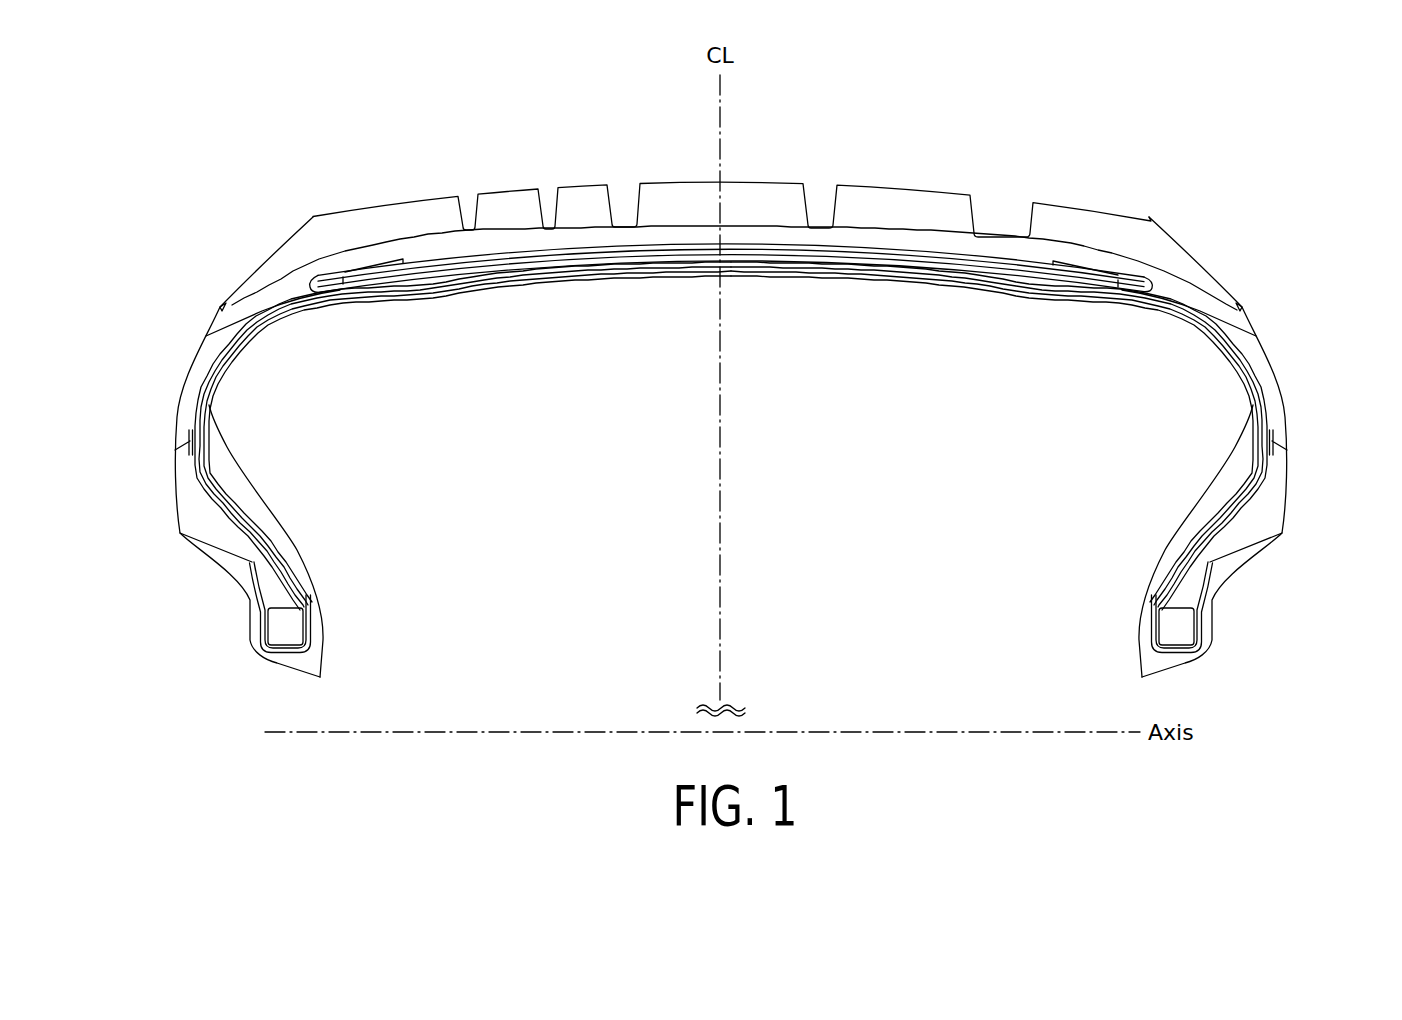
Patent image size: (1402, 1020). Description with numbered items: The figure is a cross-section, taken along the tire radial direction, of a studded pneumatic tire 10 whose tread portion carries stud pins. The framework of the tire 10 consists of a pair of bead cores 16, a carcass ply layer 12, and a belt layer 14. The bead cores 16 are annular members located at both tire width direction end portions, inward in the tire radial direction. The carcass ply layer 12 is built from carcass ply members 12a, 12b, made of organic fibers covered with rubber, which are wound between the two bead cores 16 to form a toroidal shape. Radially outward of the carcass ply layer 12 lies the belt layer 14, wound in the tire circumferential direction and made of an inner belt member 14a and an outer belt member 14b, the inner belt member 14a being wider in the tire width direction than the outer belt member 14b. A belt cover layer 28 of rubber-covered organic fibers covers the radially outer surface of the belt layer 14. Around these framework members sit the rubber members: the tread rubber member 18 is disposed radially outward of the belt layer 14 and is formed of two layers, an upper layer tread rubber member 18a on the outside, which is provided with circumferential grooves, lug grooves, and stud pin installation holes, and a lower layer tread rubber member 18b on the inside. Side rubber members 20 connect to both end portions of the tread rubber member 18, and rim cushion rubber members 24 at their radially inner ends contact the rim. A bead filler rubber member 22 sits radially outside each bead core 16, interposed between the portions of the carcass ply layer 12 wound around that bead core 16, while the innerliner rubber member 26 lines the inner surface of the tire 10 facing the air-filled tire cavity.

The pneumatic tire 10 is at (1174, 191).
The carcass ply layer 12 is at (1096, 313).
The carcass ply member 12a is at (1230, 367).
The carcass ply member 12b is at (1200, 340).
The belt layer 14 is at (982, 132).
The inner belt member 14a is at (905, 258).
The outer belt member 14b is at (957, 268).
The bead core 16 is at (290, 623).
The tread rubber member 18 is at (1276, 227).
The upper layer tread rubber member 18a is at (1143, 237).
The lower layer tread rubber member 18b is at (1143, 272).
The side rubber member 20 is at (205, 372).
The bead filler rubber member 22 is at (280, 580).
The rim cushion rubber member 24 is at (205, 510).
The innerliner rubber member 26 is at (672, 275).
The belt cover layer 28 is at (365, 262).